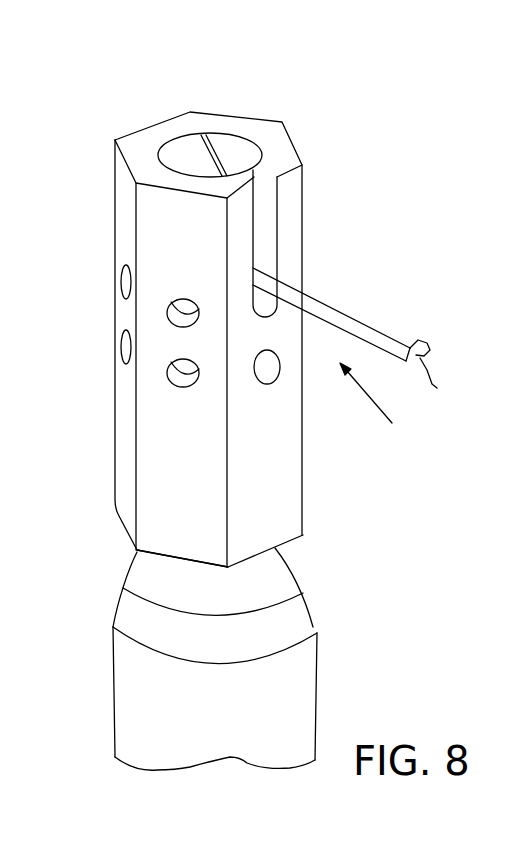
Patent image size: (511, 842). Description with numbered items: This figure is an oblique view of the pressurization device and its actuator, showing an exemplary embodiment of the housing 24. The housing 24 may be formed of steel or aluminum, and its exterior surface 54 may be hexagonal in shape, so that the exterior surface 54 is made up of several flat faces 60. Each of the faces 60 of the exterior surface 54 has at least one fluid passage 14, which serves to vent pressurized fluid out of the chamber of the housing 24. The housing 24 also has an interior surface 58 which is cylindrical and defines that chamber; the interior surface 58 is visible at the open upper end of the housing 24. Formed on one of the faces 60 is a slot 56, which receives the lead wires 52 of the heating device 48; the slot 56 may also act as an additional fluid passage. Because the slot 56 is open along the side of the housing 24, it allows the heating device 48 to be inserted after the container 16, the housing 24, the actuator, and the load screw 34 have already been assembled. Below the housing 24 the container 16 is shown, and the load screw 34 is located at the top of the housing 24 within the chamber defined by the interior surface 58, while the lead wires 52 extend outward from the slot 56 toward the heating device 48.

The fluid passage 14 is at (175, 375).
The container 16 is at (278, 617).
The housing 24 is at (287, 153).
The load screw 34 is at (227, 148).
The heating device 48 is at (374, 410).
The lead wires 52 is at (363, 325).
The exterior surface 54 is at (113, 192).
The slot 56 is at (267, 223).
The interior surface 58 is at (170, 140).
The faces 60 is at (168, 497).